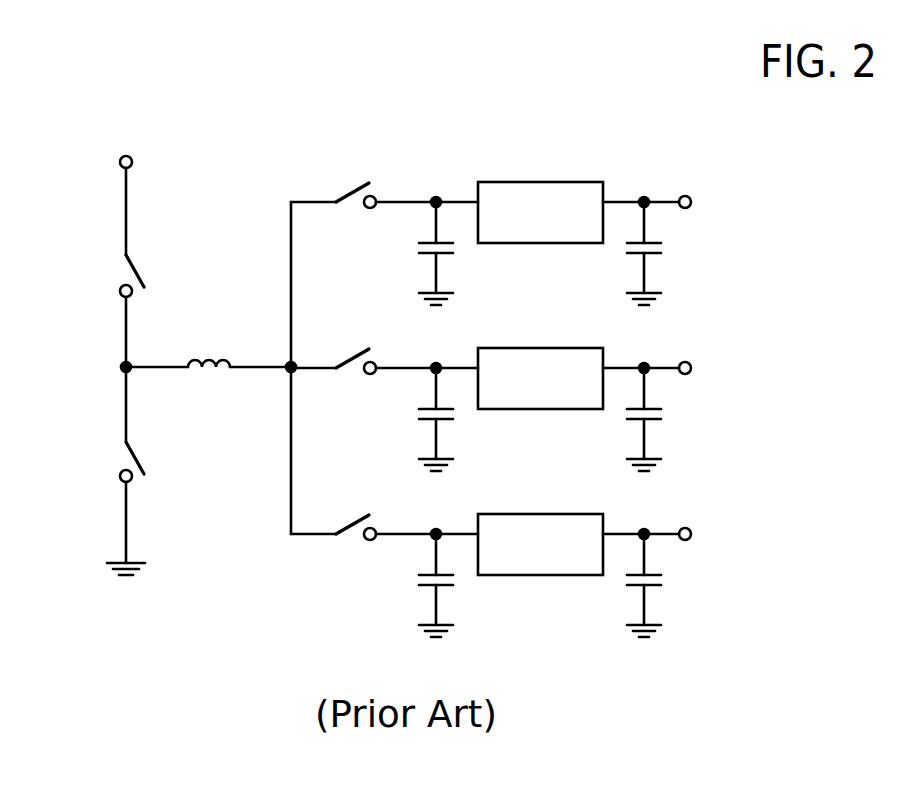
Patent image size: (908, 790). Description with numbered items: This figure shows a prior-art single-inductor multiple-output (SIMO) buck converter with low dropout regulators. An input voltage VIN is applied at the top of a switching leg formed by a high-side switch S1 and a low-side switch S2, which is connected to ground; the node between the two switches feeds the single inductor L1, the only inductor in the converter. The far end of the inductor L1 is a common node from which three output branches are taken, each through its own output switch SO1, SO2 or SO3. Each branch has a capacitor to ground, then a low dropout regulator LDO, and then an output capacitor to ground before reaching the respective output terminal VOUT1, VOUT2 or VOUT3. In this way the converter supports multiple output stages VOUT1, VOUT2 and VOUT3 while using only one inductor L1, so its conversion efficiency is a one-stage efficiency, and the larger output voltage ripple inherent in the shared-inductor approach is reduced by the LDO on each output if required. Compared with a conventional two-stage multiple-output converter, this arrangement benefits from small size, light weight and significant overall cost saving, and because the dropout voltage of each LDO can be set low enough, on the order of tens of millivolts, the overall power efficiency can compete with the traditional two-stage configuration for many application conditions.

The input voltage terminal VIN is at (126, 193).
The high-side switch S1 is at (153, 311).
The low-side switch S2 is at (146, 471).
The inductor L1 is at (208, 346).
The output switch 1 SO1 is at (384, 179).
The output switch 2 SO2 is at (384, 345).
The output switch 3 SO3 is at (384, 512).
The low dropout regulator LDO is at (540, 378).
The output stage VOUT1 is at (647, 238).
The output stage VOUT2 is at (647, 404).
The output stage VOUT3 is at (647, 570).